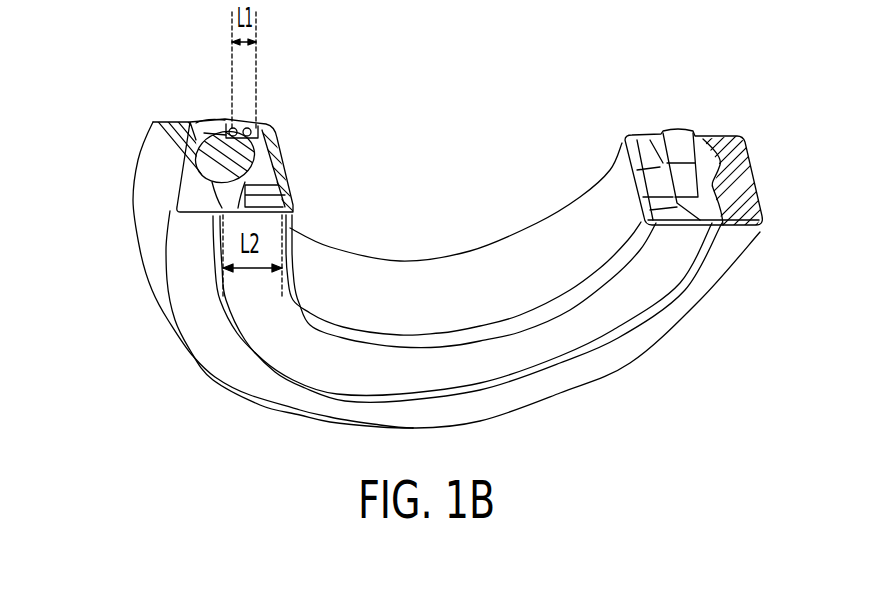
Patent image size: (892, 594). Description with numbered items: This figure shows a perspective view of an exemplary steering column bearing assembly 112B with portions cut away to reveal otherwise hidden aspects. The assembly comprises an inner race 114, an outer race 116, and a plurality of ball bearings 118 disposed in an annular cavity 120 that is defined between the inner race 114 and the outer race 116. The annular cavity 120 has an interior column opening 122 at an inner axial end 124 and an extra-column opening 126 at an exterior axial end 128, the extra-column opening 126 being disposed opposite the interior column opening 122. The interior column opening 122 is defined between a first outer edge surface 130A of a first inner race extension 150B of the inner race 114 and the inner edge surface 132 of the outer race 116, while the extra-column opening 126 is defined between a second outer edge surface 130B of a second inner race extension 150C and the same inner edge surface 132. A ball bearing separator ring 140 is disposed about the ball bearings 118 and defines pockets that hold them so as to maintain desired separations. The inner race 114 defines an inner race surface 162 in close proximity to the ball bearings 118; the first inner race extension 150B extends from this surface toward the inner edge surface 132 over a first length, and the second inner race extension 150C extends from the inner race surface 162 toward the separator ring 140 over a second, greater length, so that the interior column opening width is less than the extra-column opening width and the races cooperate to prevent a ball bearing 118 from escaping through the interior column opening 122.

The steering column bearing assembly 112B is at (744, 117).
The inner race 114 is at (280, 188).
The outer race 116 is at (170, 150).
The ball bearings 118 is at (217, 152).
The annular cavity 120 is at (265, 175).
The interior column opening 122 is at (665, 300).
The inner axial end 124 is at (710, 228).
The extra-column opening 126 is at (730, 137).
The exterior axial end 128 is at (699, 112).
The first outer edge surface 130A is at (219, 219).
The second outer edge surface 130B is at (233, 128).
The inner edge surface 132 is at (213, 213).
The ball bearing separator ring 140 is at (680, 140).
The first inner race extension 150B is at (287, 212).
The second inner race extension 150C is at (243, 128).
The inner race surface 162 is at (257, 127).